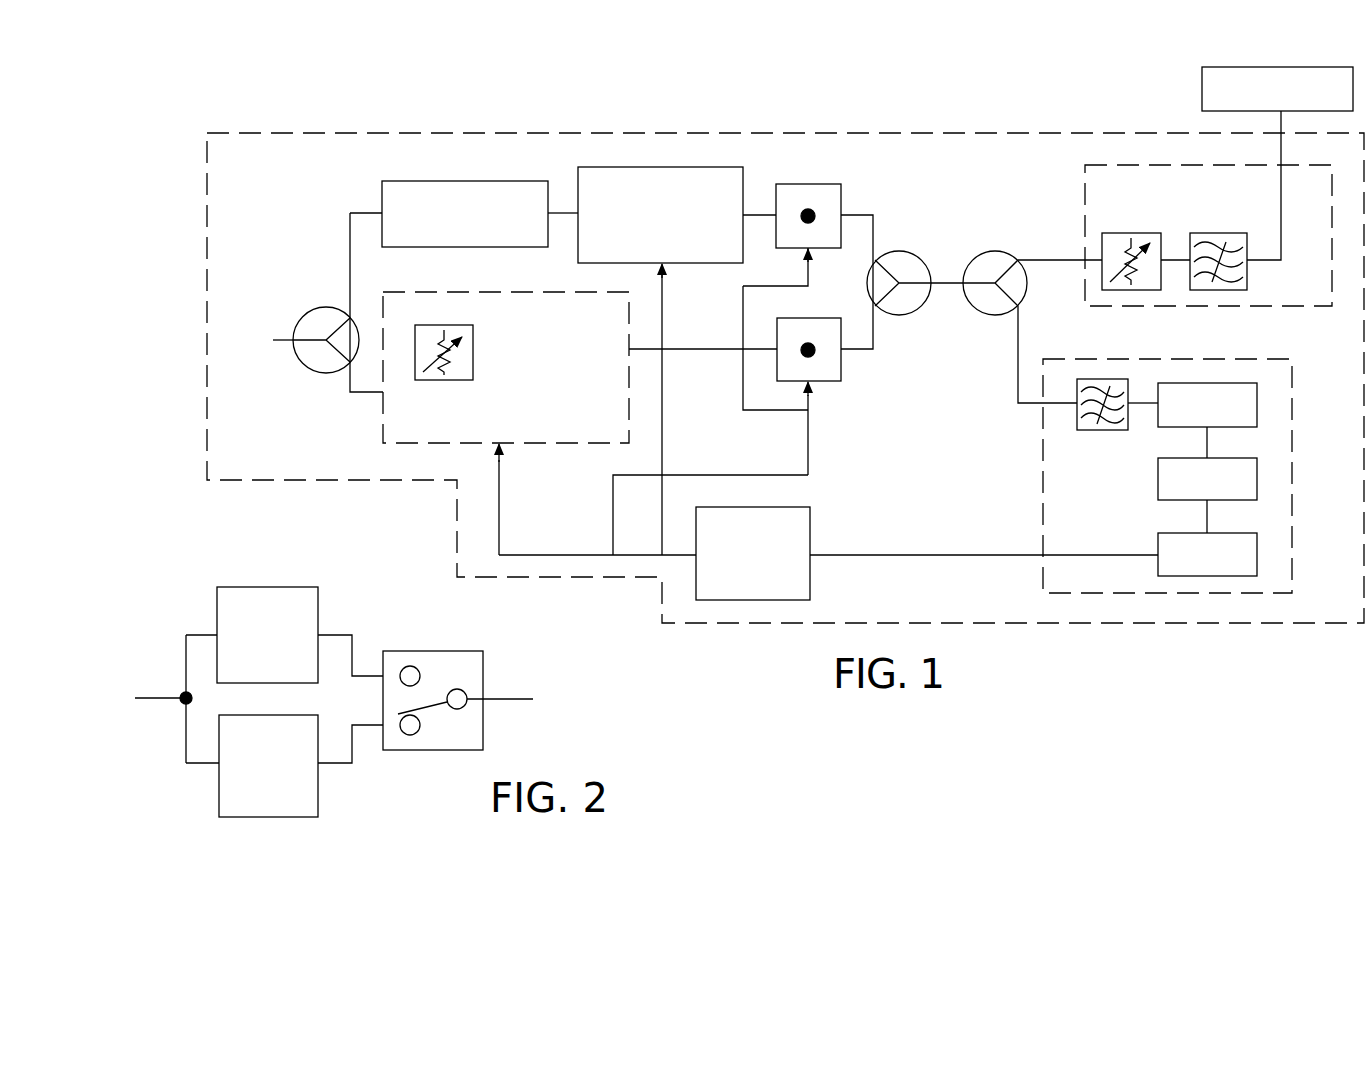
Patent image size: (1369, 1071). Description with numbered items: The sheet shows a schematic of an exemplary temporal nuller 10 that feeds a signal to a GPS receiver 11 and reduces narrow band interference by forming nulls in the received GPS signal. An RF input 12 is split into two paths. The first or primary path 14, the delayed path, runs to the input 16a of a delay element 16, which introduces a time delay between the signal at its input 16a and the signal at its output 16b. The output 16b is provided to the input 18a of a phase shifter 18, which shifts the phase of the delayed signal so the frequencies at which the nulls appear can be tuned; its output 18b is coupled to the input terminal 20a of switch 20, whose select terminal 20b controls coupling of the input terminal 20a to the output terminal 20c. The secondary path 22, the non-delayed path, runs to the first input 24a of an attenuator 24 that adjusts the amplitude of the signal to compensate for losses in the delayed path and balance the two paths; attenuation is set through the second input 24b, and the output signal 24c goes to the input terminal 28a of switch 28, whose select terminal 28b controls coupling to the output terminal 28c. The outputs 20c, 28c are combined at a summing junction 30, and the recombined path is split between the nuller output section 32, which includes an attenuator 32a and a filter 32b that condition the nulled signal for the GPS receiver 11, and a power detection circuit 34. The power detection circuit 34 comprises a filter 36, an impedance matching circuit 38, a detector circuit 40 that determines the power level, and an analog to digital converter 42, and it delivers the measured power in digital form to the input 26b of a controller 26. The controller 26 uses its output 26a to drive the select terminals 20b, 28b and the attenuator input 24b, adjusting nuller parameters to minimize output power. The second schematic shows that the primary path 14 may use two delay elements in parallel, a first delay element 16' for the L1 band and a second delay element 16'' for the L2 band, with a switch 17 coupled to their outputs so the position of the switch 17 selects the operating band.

In FIG. 1, the temporal nuller 10 is at (610, 134).
In FIG. 1, the GPS receiver 11 is at (1202, 75).
In FIG. 1, the RF input 12 is at (178, 308).
In FIG. 1, the first or primary path 14 is at (345, 197).
In FIG. 2, the first or primary path 14 is at (142, 686).
In FIG. 1, the delay element 16 is at (465, 195).
In FIG. 1, the input of delay element 16a is at (382, 213).
In FIG. 1, the output of delay element 16b is at (548, 213).
In FIG. 2, the first delay element 16' is at (256, 766).
In FIG. 2, the second delay element 16'' is at (261, 635).
In FIG. 2, the switch 17 is at (425, 651).
In FIG. 1, the phase shifter 18 is at (640, 167).
In FIG. 1, the input of phase shifter 18a is at (578, 215).
In FIG. 1, the output of phase shifter 18b is at (744, 215).
In FIG. 1, the switch 20 is at (805, 184).
In FIG. 1, the input terminal of switch 20a is at (776, 218).
In FIG. 1, the select terminal 20b is at (812, 250).
In FIG. 1, the output terminal of switch 20c is at (818, 200).
In FIG. 1, the secondary path 22 is at (352, 420).
In FIG. 1, the attenuator 24 is at (415, 443).
In FIG. 1, the first input of attenuator 24a is at (383, 394).
In FIG. 1, the second input of attenuator 24b is at (500, 446).
In FIG. 1, the output signal of attenuator 24c is at (630, 349).
In FIG. 1, the controller 26 is at (744, 601).
In FIG. 1, the output of controller 26a is at (693, 556).
In FIG. 1, the input of controller 26b is at (810, 556).
In FIG. 1, the switch 28 is at (777, 330).
In FIG. 1, the input terminal of switch 28a is at (777, 353).
In FIG. 1, the select terminal 28b is at (815, 385).
In FIG. 1, the output terminal of switch 28c is at (818, 334).
In FIG. 1, the summing junction 30 is at (890, 252).
In FIG. 1, the nuller output section 32 is at (1085, 170).
In FIG. 1, the attenuator 32a is at (1118, 233).
In FIG. 1, the filter 32b is at (1247, 272).
In FIG. 1, the power detection circuit 34 is at (1043, 523).
In FIG. 1, the filter 36 is at (1106, 430).
In FIG. 1, the impedance matching circuit 38 is at (1158, 425).
In FIG. 1, the detector circuit 40 is at (1158, 480).
In FIG. 1, the analog to digital converter 42 is at (1165, 538).